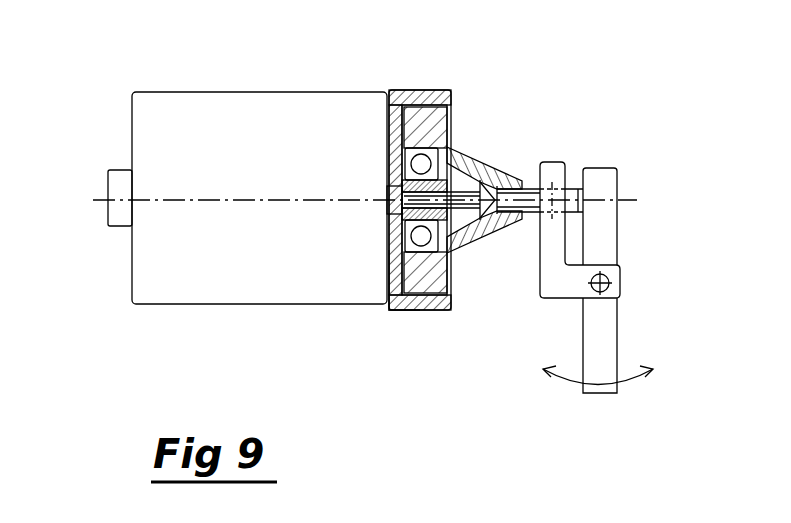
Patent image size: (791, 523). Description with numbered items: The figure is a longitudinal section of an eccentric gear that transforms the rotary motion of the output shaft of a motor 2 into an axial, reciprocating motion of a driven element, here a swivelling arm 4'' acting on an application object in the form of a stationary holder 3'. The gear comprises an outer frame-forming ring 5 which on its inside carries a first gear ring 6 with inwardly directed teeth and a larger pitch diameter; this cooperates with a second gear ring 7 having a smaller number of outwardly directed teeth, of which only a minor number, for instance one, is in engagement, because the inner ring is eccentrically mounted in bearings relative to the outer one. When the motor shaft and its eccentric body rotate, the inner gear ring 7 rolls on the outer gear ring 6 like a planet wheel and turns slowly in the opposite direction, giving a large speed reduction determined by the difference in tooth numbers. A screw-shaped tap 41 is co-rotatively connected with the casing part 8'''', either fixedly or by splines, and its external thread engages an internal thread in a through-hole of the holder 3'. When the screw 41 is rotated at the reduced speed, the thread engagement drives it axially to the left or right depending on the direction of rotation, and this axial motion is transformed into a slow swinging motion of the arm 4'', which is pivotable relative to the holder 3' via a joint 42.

The motor 2 is at (262, 108).
The second gear ring 7 is at (428, 97).
The outer frame-forming ring 5 is at (393, 307).
The first gear ring 6 is at (428, 293).
The casing part 8'''' is at (484, 165).
The screw-shaped tap 41 is at (528, 181).
The holder 3' is at (580, 197).
The swivelling arm 4'' is at (608, 268).
The joint 42 is at (606, 280).